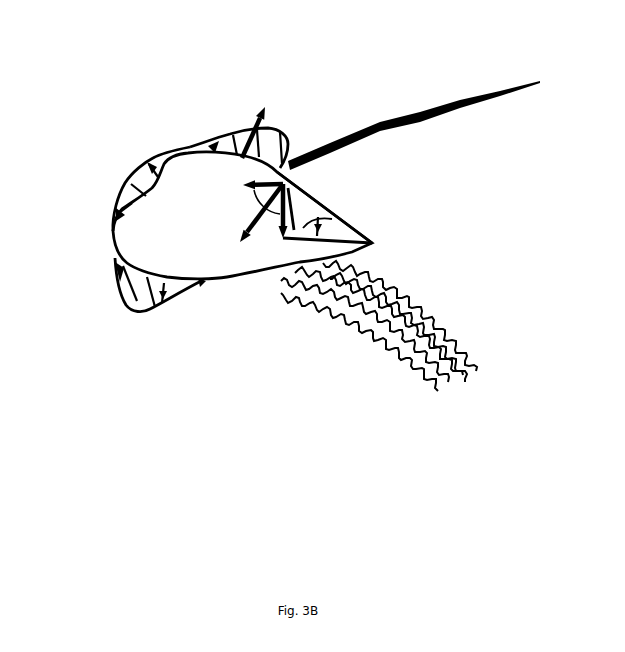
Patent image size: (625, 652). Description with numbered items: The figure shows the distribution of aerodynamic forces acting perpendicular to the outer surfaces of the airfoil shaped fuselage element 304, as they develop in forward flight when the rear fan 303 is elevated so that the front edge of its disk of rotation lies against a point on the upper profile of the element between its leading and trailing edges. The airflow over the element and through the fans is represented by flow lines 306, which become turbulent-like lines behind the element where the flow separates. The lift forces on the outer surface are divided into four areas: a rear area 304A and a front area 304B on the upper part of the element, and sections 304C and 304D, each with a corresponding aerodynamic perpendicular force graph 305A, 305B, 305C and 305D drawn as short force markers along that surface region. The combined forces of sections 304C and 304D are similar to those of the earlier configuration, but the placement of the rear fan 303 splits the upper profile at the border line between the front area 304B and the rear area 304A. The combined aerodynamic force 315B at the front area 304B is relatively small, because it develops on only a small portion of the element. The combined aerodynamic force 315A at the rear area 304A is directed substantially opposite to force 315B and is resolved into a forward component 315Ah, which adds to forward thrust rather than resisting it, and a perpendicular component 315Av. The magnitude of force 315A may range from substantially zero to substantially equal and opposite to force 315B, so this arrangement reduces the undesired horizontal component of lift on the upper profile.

The rear fan 303 is at (453, 95).
The airfoil shaped fuselage element 304 is at (237, 412).
The rear area 304A is at (322, 193).
The front area 304B is at (205, 143).
The section 304C of the airfoil shaped fuselage element 304C is at (137, 165).
The section 304D of the airfoil shaped fuselage element 304D is at (114, 263).
The aerodynamic perpendicular force graph 305A is at (335, 218).
The aerodynamic perpendicular force graph 305B is at (232, 133).
The aerodynamic perpendicular force graph 305C is at (118, 193).
The aerodynamic perpendicular force graph 305D is at (118, 297).
The flow lines 306 is at (433, 382).
The combined aerodynamic force 315A is at (240, 243).
The forward component 315Ah is at (243, 185).
The vertical force component 315Av is at (281, 243).
The combined aerodynamic force 315B is at (268, 104).